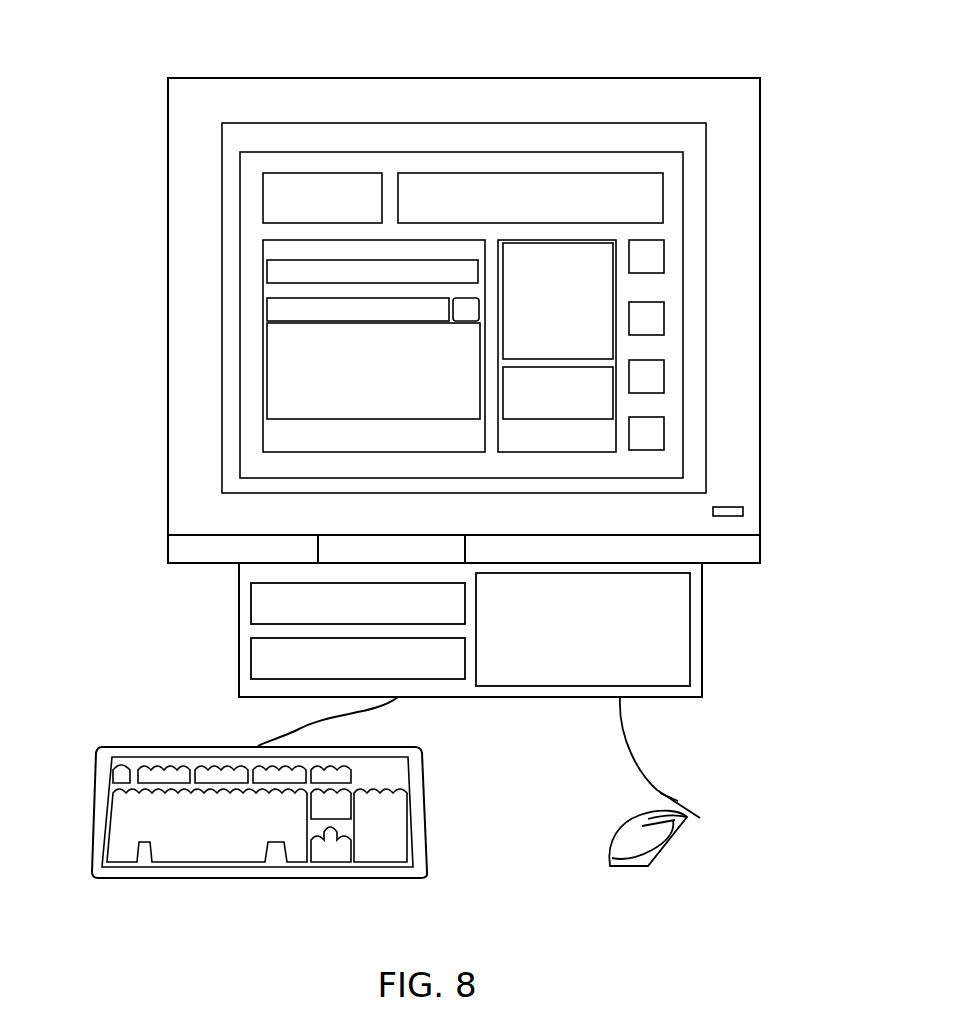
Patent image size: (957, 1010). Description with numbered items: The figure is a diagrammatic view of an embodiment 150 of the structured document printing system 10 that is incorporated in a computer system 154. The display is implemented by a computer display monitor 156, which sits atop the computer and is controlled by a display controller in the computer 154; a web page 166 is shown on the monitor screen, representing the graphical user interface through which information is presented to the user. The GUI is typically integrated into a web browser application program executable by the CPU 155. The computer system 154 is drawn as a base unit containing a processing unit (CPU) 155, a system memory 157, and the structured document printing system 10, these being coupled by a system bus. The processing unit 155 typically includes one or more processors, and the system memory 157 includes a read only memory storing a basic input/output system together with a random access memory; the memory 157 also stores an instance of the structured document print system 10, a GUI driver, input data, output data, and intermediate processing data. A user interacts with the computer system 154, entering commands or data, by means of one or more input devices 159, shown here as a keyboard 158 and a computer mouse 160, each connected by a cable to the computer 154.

The embodiment of the structured document printing system 150 is at (90, 38).
The computer display monitor 156 is at (168, 150).
The web page displayed on monitor 166 is at (393, 165).
The computer system 154 is at (470, 697).
The processing unit (CPU) 155 is at (251, 602).
The system memory 157 is at (251, 658).
The structured document printing system 10 is at (690, 628).
The keyboard 158 is at (98, 803).
The input devices 159 is at (747, 775).
The computer mouse 160 is at (625, 828).